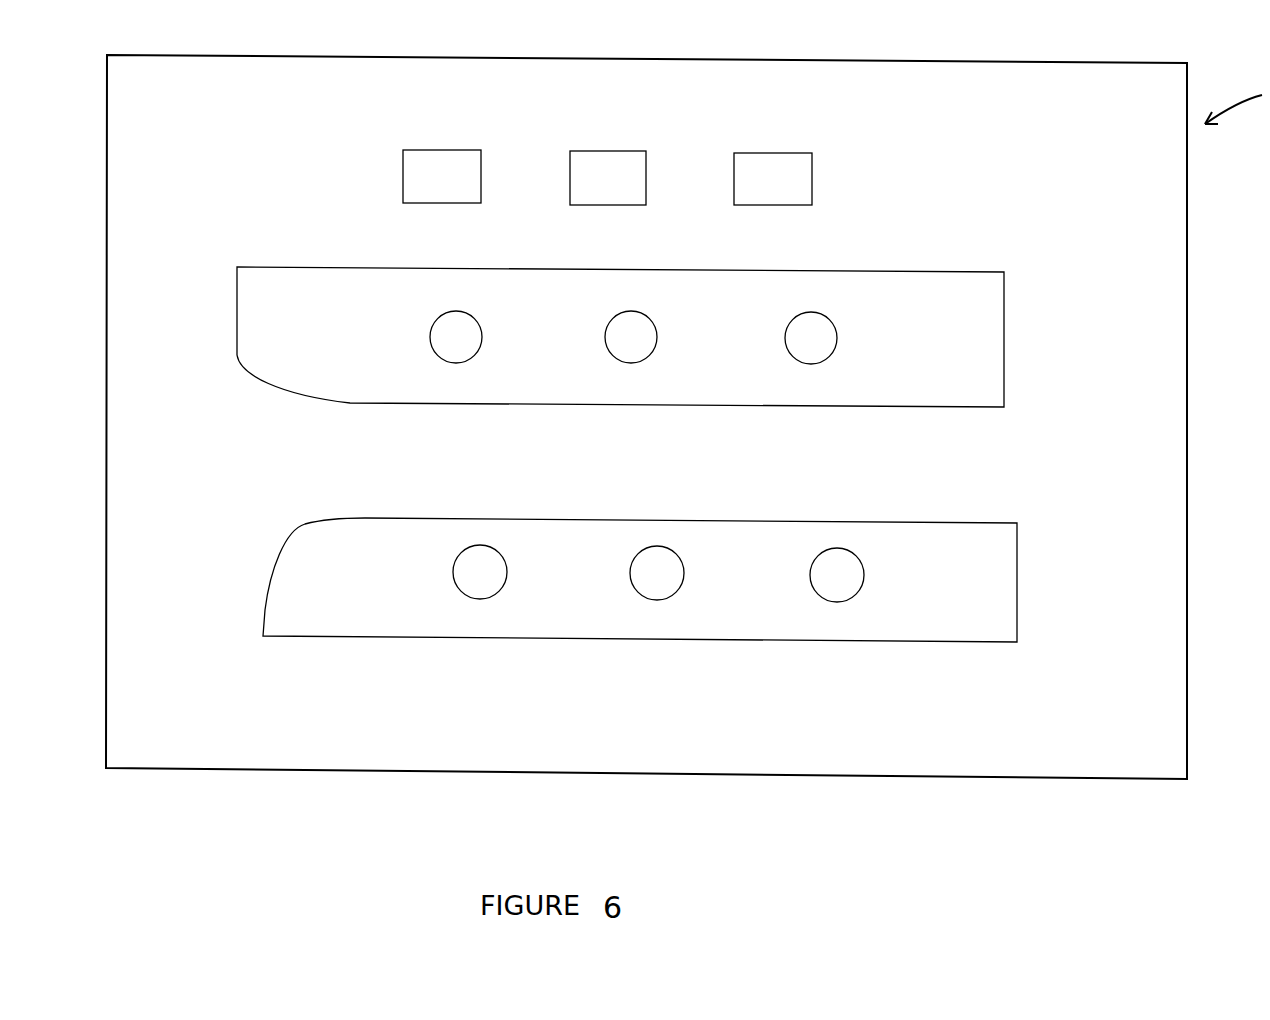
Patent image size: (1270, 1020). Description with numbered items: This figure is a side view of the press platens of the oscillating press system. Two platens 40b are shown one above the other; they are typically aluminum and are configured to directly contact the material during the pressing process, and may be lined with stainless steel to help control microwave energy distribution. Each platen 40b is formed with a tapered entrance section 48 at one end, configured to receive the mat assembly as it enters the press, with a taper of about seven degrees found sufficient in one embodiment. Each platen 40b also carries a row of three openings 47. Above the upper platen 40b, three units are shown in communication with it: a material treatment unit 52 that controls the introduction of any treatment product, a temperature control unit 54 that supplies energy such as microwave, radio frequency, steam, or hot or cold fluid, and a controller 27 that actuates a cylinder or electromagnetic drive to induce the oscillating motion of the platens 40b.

The material treatment unit 52 is at (440, 272).
The temperature control unit 54 is at (604, 270).
The controller 27 is at (768, 268).
The platen 40b is at (639, 460).
The hole 47 is at (829, 362).
The tapered entrance section 48 is at (608, 460).